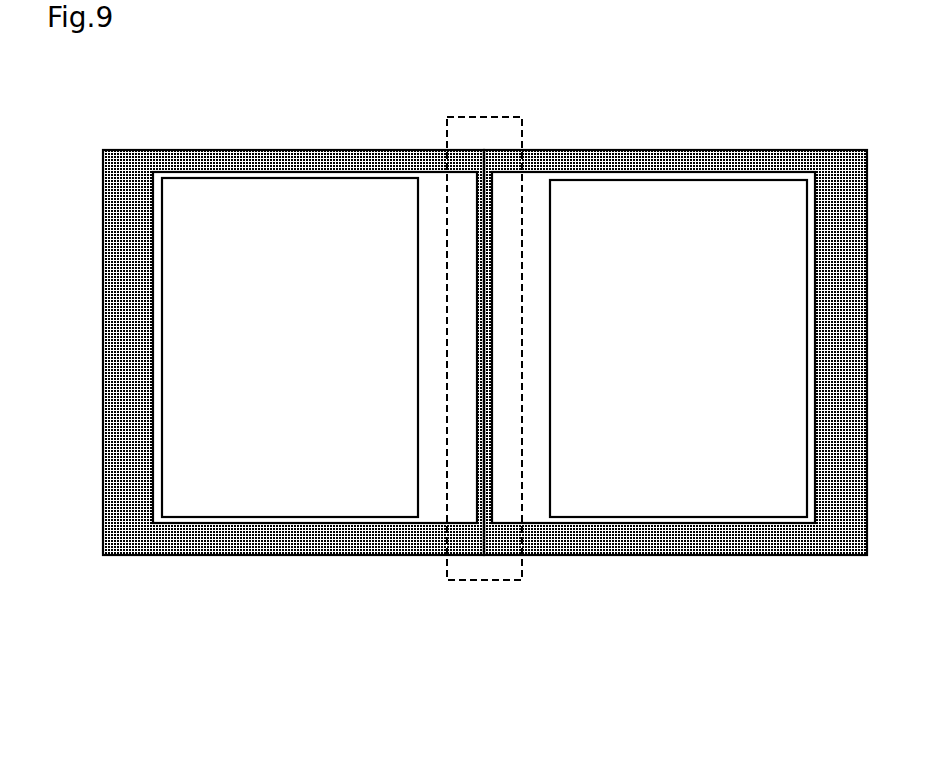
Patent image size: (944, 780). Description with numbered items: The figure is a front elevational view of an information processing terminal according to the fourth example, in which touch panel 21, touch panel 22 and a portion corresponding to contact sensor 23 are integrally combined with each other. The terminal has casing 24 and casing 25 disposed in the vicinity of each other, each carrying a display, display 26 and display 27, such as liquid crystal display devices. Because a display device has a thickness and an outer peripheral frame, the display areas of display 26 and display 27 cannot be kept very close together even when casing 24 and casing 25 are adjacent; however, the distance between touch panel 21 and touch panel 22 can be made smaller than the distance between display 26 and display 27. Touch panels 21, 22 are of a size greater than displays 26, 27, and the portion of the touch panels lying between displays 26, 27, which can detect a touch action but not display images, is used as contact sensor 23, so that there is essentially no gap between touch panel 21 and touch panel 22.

The touch panel 21 is at (300, 172).
The touch panel 22 is at (545, 172).
The contact sensor 23 is at (476, 583).
The casing 24 is at (292, 557).
The casing 25 is at (583, 558).
The display 26 is at (180, 178).
The display 27 is at (731, 178).